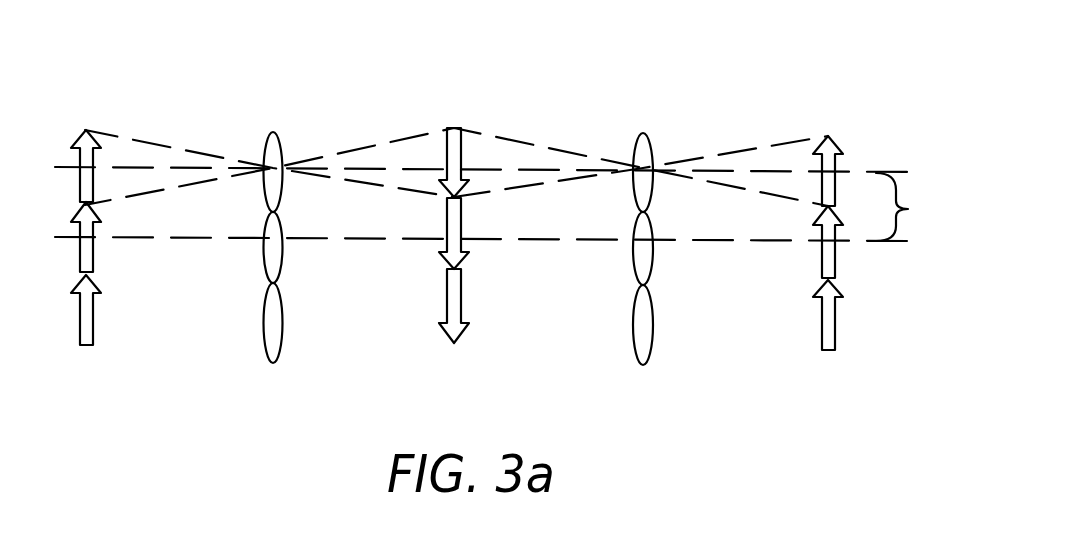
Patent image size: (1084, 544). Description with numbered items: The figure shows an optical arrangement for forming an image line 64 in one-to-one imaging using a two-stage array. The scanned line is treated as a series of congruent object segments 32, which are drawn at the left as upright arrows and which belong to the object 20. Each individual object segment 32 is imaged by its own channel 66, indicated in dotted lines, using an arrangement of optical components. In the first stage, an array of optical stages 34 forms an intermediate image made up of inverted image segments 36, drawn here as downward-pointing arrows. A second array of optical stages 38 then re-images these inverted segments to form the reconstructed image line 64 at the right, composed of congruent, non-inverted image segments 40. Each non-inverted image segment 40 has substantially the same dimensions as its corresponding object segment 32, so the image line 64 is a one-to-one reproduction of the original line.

The object 20 is at (107, 315).
The object segment 32 is at (84, 134).
The optical stage 34 is at (268, 133).
The inverted image segment 36 is at (448, 147).
The optical stage 38 is at (642, 148).
The non-inverted image segment 40 is at (816, 141).
The image line 64 is at (802, 342).
The channel 66 is at (919, 207).